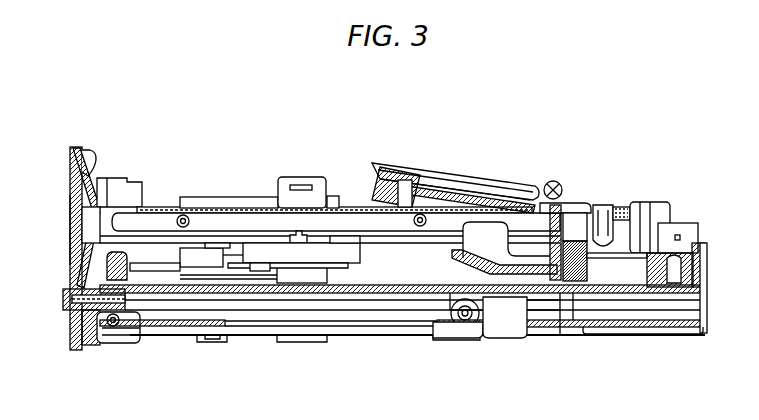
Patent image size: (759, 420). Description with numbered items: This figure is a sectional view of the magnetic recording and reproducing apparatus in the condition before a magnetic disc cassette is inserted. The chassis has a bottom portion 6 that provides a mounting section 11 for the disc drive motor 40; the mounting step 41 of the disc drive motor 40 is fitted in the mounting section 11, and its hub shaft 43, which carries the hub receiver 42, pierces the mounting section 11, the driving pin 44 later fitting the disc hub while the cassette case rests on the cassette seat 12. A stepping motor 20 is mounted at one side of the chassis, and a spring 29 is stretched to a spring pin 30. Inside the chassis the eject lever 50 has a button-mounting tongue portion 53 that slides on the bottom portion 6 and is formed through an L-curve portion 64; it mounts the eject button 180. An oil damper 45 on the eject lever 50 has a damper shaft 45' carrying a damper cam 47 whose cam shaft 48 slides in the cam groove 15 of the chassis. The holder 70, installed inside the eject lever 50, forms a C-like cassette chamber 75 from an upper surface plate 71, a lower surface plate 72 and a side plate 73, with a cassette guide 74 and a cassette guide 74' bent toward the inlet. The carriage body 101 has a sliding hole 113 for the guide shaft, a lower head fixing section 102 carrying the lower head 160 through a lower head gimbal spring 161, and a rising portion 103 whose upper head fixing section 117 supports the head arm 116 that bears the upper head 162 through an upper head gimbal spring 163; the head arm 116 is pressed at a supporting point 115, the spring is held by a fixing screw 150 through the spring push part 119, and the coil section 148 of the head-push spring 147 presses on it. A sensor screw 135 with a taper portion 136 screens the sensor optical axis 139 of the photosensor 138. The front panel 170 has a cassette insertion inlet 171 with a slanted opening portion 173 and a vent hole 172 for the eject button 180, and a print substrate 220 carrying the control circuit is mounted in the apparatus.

The bottom portion 6 is at (590, 332).
The mounting section 11 is at (278, 327).
The cassette seat 12 is at (488, 332).
The cam groove 15 is at (192, 318).
The stepping motor 20 is at (655, 205).
The spring 29 is at (156, 320).
The spring pin 30 is at (86, 270).
The disc drive motor 40 is at (355, 323).
The mounting step 41 is at (340, 328).
The hub receiver 42 is at (240, 250).
The hub shaft 43 is at (305, 245).
The driving pin 44 is at (345, 236).
The oil damper 45 is at (220, 180).
The damper shaft 45' is at (222, 367).
The damper cam 47 is at (243, 318).
The cam shaft 48 is at (180, 332).
The eject lever 50 is at (300, 322).
The button-mounting tongue portion 53 is at (97, 343).
The L-curve portion 64 is at (127, 343).
The holder 70 is at (172, 212).
The upper surface plate 71 is at (262, 235).
The lower surface plate 72 is at (292, 238).
The side plate 73 is at (322, 265).
The cassette guide 74 is at (127, 173).
The cassette guide 74' is at (271, 238).
The cassette chamber 75 is at (108, 205).
The carriage body 101 is at (515, 322).
The lower head fixing section 102 is at (448, 332).
The rising portion 103 is at (545, 326).
The sliding hole 113 is at (536, 195).
The supporting point 115 is at (460, 195).
The head arm 116 is at (415, 185).
The upper head fixing section 117 is at (440, 184).
The spring push part 119 is at (615, 215).
The sensor screw 135 is at (640, 323).
The taper portion 136 is at (618, 326).
The photosensor 138 is at (688, 225).
The sensor optical axis 139 is at (680, 240).
The head-push spring 147 is at (495, 188).
The coil section 148 is at (558, 185).
The fixing screw 150 is at (575, 215).
The lower head 160 is at (410, 312).
The lower head gimbal spring 161 is at (385, 332).
The upper head 162 is at (365, 185).
The upper head gimbal spring 163 is at (376, 185).
The front panel 170 is at (73, 345).
The cassette insertion inlet 171 is at (70, 230).
The vent hole 172 is at (70, 320).
The slanted opening portion 173 is at (87, 240).
The eject button 180 is at (70, 300).
The print substrate 220 is at (675, 316).